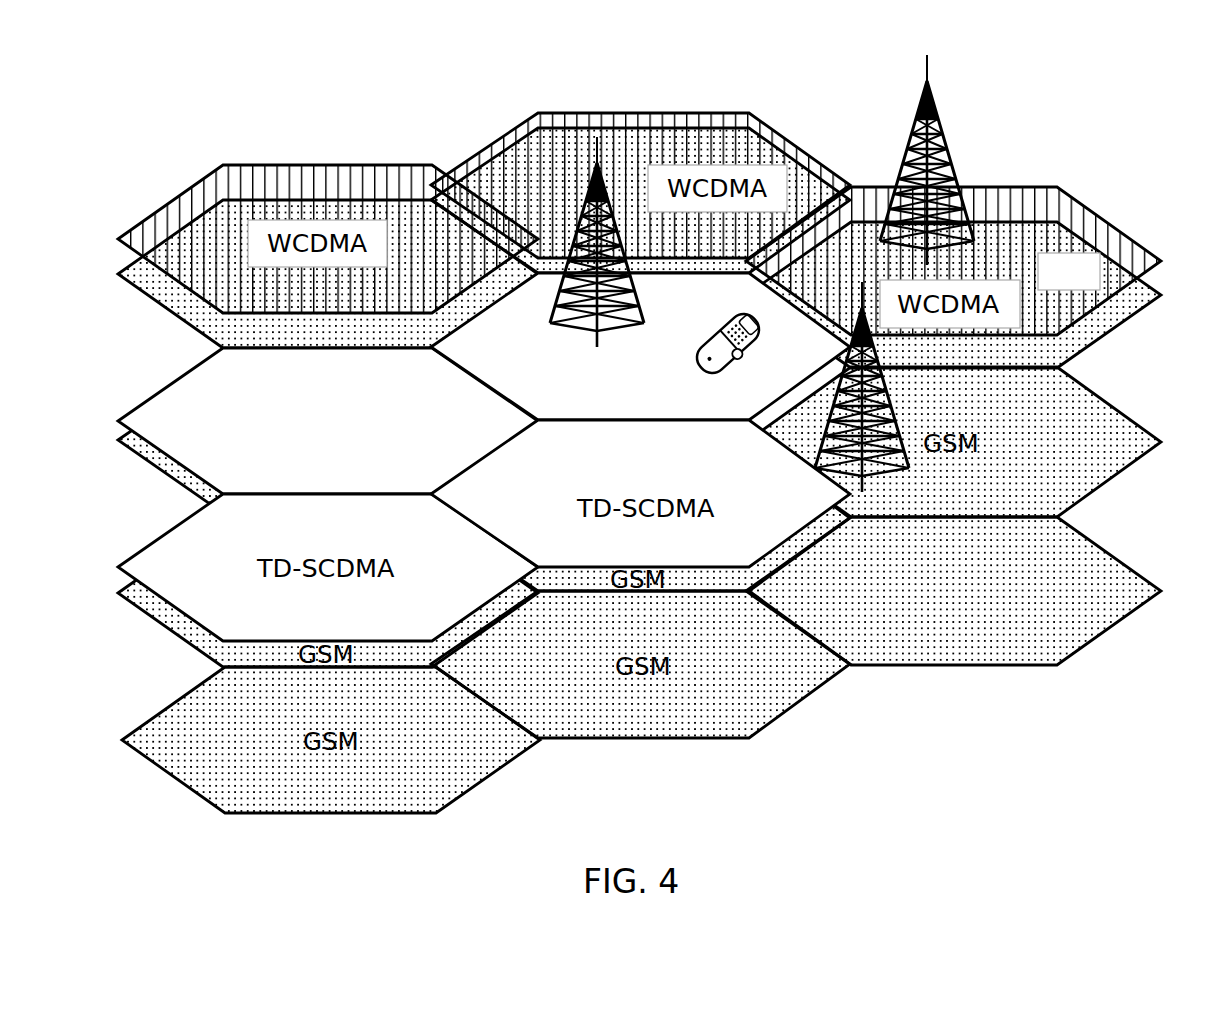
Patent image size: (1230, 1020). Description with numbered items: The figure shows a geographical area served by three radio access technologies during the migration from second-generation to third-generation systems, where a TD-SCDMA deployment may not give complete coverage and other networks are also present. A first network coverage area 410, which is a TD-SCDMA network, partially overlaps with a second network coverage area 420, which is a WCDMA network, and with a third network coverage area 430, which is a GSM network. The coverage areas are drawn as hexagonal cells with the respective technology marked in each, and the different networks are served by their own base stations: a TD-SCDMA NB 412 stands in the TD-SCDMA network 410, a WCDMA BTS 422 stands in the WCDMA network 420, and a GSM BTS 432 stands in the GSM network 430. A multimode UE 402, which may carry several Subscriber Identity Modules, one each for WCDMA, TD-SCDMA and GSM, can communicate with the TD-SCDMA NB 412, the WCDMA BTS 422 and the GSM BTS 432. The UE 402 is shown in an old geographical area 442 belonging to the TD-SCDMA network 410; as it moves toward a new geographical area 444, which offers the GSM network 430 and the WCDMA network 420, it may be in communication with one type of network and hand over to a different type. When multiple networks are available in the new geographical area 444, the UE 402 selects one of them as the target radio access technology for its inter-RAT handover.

The multimode UE 402 is at (731, 313).
The first network coverage area 410 is at (163, 392).
The TD-SCDMA NB 412 is at (597, 137).
The second network coverage area 420 is at (953, 244).
The WCDMA BTS 422 is at (943, 56).
The third network coverage area 430 is at (1148, 578).
The GSM BTS 432 is at (888, 391).
The old geographical area 442 is at (630, 415).
The new geographical area 444 is at (1090, 287).